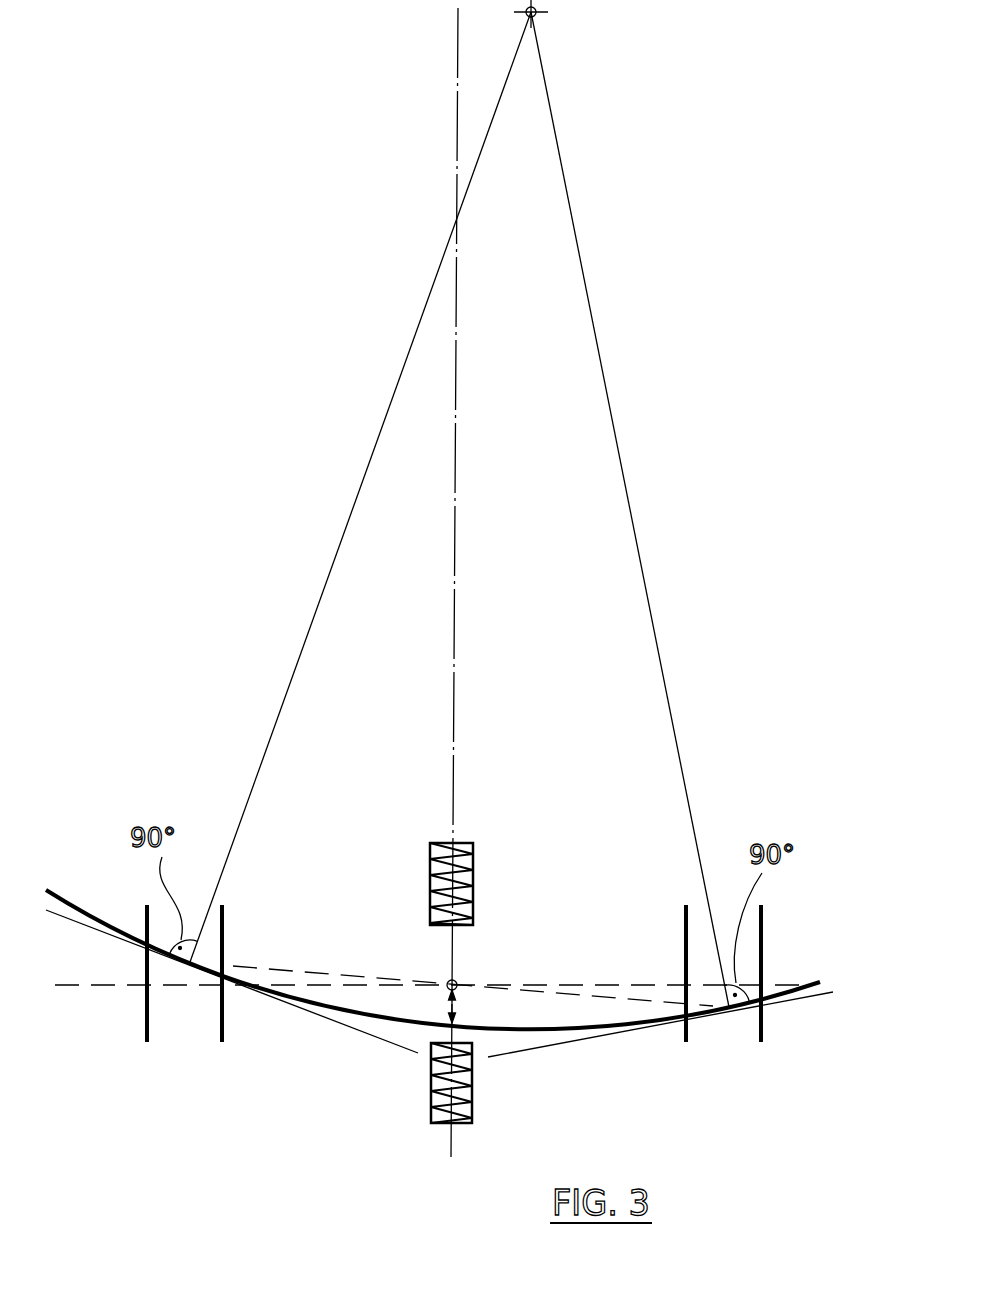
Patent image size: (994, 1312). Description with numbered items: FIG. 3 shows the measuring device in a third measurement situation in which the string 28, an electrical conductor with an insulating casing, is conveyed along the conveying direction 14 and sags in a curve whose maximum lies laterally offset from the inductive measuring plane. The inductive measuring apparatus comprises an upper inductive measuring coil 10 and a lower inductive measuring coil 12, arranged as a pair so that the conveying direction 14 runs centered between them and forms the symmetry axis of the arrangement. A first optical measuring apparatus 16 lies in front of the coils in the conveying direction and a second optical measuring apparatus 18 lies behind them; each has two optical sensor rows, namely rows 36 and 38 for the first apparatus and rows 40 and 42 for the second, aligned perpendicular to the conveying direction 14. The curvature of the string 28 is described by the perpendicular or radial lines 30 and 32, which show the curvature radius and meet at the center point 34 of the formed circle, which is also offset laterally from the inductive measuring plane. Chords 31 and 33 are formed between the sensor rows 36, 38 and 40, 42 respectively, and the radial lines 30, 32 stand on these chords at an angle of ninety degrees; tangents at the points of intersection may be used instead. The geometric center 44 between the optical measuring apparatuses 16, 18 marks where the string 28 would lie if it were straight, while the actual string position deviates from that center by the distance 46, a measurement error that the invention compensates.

The upper inductive measuring coil 10 is at (472, 847).
The lower inductive measuring coil 12 is at (433, 1103).
The conveying direction 14 is at (625, 982).
The first optical measuring apparatus 16 is at (200, 898).
The second optical measuring apparatus 18 is at (728, 898).
The string 28 is at (345, 1008).
The perpendicular or radial line 30 is at (374, 446).
The chord 31 is at (303, 1010).
The perpendicular or radial line 32 is at (621, 455).
The chord 33 is at (631, 1032).
The center point 34 is at (536, 18).
The optical sensor row 36 is at (145, 1000).
The optical sensor row 38 is at (224, 937).
The optical sensor row 40 is at (683, 935).
The optical sensor row 42 is at (762, 947).
The geometric center 44 is at (460, 978).
The deviation of string position 46 is at (458, 1008).